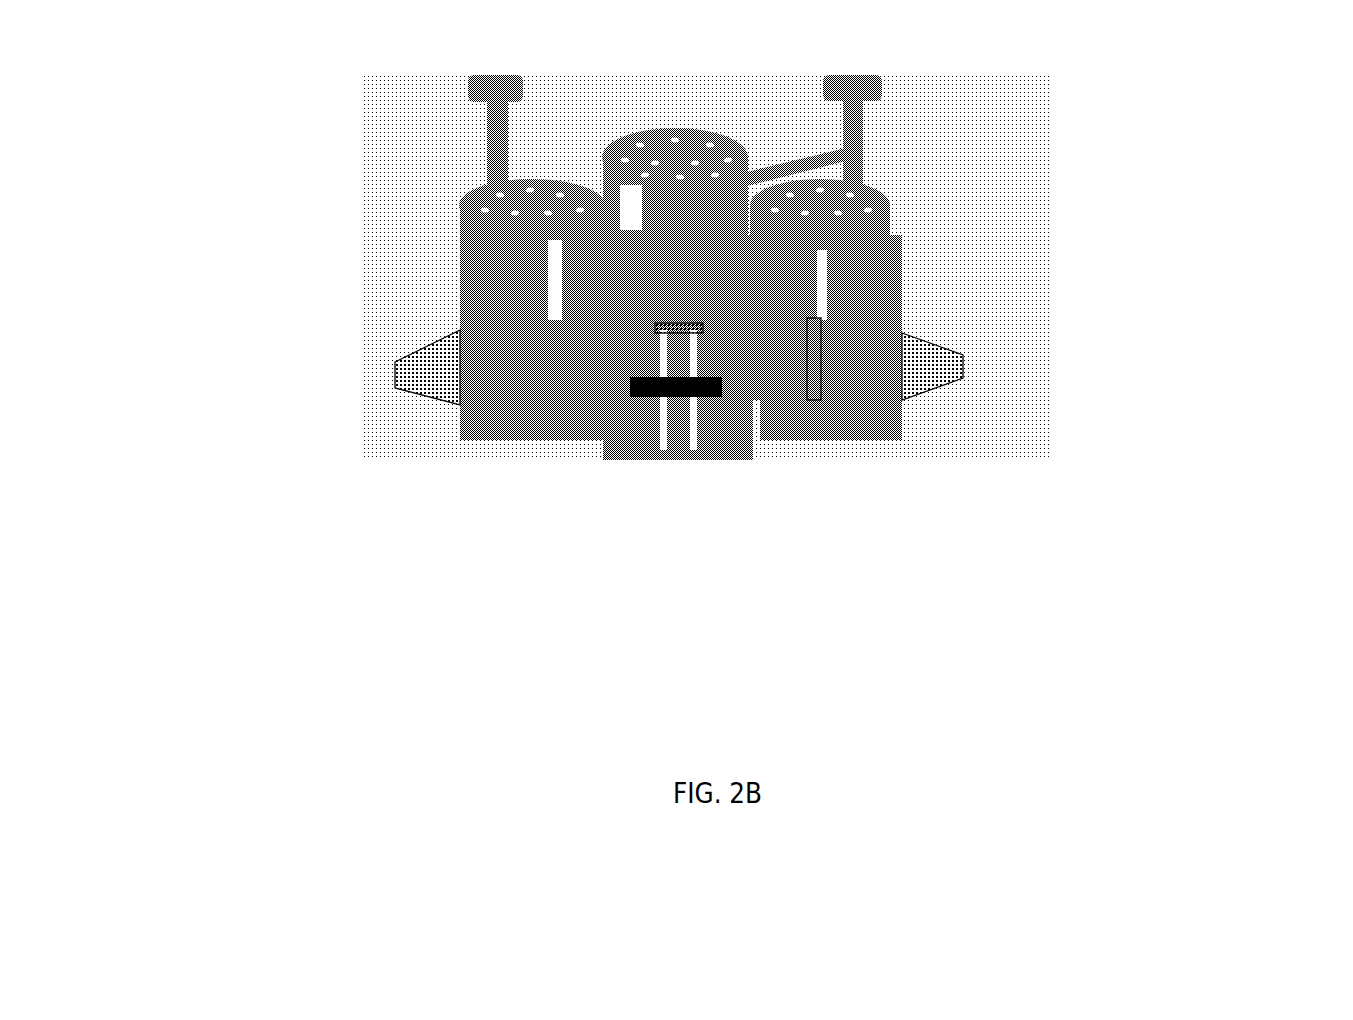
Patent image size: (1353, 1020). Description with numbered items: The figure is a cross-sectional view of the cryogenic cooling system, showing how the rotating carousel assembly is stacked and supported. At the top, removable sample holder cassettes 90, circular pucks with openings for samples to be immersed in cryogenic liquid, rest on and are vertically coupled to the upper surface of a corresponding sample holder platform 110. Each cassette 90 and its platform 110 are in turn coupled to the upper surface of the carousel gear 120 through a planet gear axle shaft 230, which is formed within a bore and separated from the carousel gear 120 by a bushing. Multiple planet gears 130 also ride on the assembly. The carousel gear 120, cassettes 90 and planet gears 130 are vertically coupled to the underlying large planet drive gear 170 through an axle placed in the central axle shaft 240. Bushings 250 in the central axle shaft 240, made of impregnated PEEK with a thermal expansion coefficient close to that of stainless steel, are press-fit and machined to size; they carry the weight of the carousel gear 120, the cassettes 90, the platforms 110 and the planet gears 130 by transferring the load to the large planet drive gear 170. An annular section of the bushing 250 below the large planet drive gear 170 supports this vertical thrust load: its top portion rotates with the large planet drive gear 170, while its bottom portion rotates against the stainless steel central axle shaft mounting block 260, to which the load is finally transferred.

The sample holder cassette 90 is at (490, 237).
The sample holder platform 110 is at (472, 272).
The carousel gear 120 is at (885, 368).
The planet gear 130 is at (500, 398).
The large planet drive gear 170 is at (877, 415).
The planet gear axle shaft 230 is at (813, 363).
The central axle shaft 240 is at (679, 455).
The bushings 250 is at (658, 358).
The central axle shaft mounting block 260 is at (747, 455).